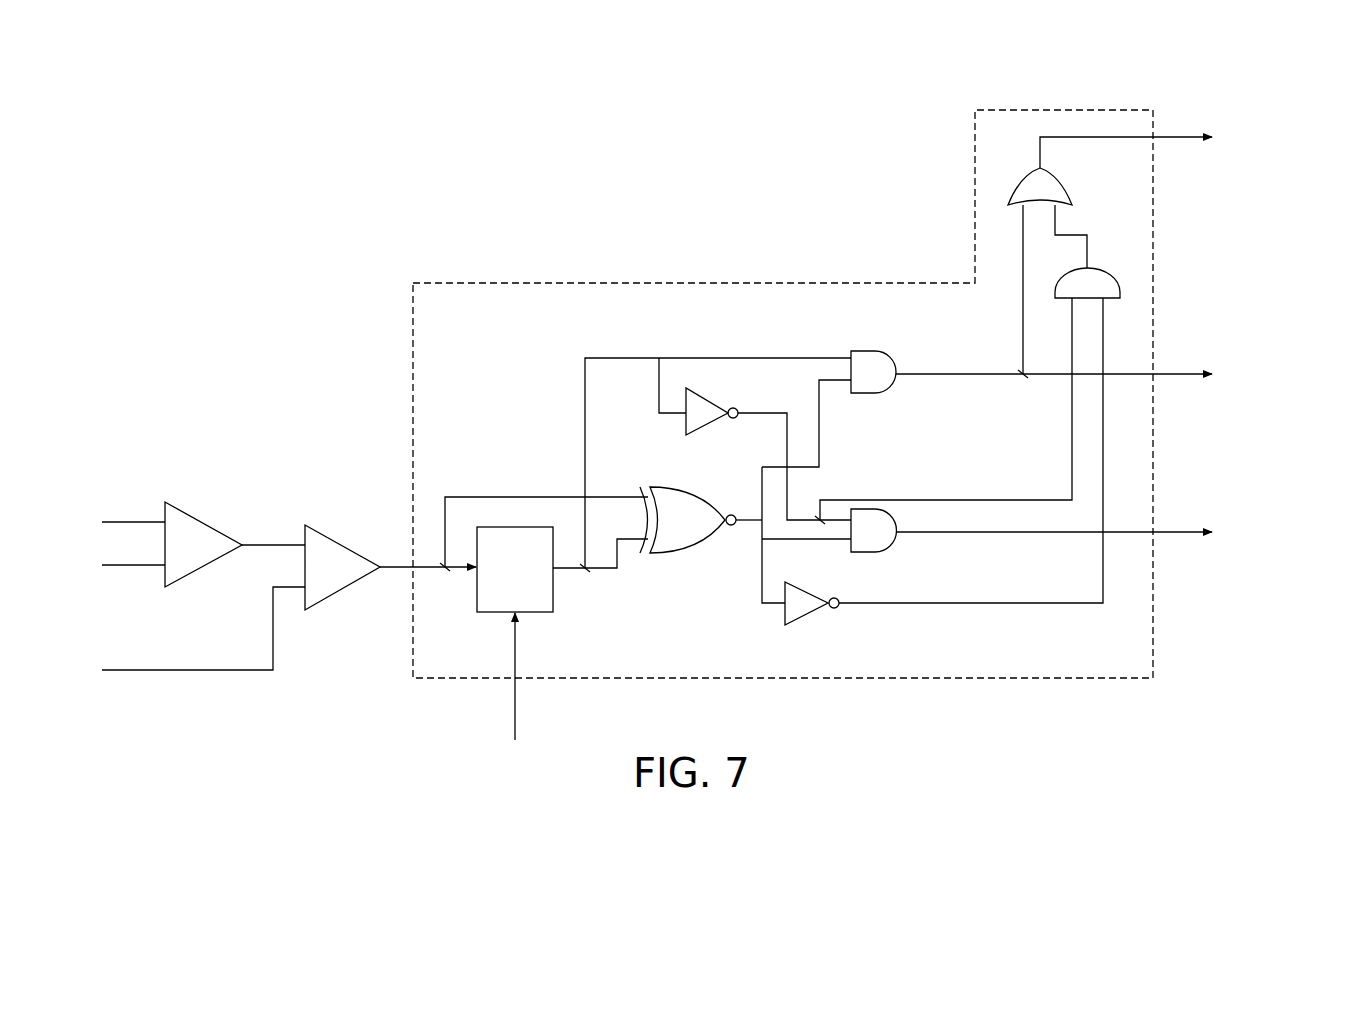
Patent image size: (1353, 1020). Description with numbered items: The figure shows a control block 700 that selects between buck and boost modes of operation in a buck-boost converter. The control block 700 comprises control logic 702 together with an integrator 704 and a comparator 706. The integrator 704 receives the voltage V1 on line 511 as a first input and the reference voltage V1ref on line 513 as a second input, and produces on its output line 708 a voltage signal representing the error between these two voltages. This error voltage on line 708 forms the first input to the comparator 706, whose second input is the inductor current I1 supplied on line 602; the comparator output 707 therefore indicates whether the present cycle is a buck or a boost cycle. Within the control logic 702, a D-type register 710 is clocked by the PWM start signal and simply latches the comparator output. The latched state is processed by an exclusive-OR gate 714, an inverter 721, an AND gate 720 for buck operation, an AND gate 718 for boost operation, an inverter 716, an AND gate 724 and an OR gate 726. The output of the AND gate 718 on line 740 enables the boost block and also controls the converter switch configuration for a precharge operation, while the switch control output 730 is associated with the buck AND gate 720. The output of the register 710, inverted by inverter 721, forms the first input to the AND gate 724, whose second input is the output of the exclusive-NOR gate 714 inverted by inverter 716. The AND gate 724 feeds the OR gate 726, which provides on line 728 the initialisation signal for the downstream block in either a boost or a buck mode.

The control block 700 is at (131, 371).
The control logic 702 is at (413, 289).
The line 511 is at (140, 522).
The line 513 is at (140, 565).
The line 602 is at (140, 672).
The integrator 704 is at (206, 524).
The comparator 706 is at (345, 589).
The comparator output 707 is at (393, 565).
The output line 708 is at (278, 544).
The D-type register 710 is at (490, 612).
The exclusive-OR gate 714 is at (665, 553).
The inverter 716 is at (812, 615).
The AND gate 718 is at (516, 705).
The AND gate 720 is at (862, 351).
The inverter 721 is at (705, 432).
The AND gate 724 is at (1100, 266).
The OR gate 726 is at (1062, 178).
The line 728 is at (1183, 136).
The switch control output 730 is at (1180, 373).
The line 740 is at (1180, 531).